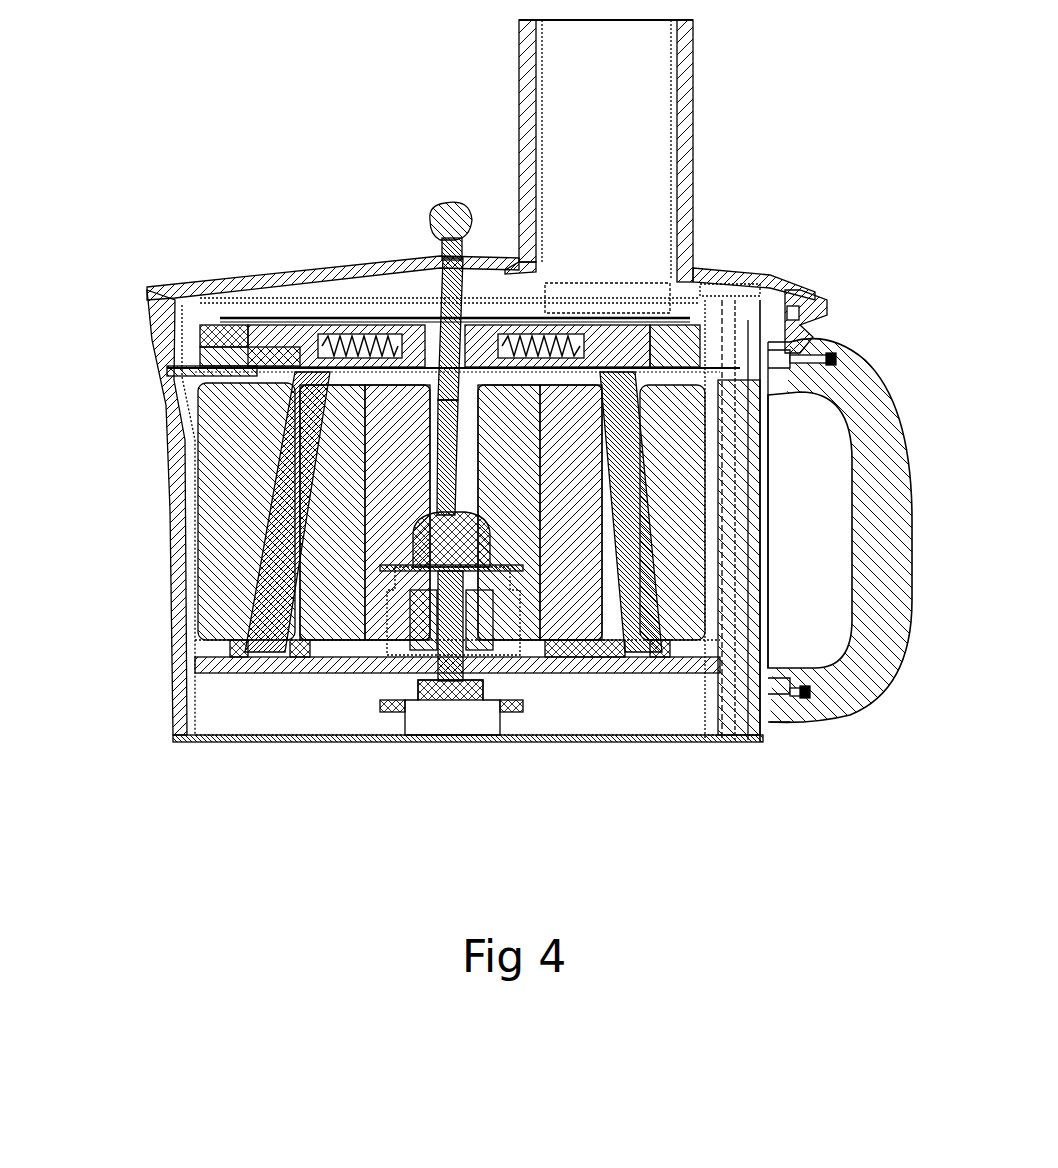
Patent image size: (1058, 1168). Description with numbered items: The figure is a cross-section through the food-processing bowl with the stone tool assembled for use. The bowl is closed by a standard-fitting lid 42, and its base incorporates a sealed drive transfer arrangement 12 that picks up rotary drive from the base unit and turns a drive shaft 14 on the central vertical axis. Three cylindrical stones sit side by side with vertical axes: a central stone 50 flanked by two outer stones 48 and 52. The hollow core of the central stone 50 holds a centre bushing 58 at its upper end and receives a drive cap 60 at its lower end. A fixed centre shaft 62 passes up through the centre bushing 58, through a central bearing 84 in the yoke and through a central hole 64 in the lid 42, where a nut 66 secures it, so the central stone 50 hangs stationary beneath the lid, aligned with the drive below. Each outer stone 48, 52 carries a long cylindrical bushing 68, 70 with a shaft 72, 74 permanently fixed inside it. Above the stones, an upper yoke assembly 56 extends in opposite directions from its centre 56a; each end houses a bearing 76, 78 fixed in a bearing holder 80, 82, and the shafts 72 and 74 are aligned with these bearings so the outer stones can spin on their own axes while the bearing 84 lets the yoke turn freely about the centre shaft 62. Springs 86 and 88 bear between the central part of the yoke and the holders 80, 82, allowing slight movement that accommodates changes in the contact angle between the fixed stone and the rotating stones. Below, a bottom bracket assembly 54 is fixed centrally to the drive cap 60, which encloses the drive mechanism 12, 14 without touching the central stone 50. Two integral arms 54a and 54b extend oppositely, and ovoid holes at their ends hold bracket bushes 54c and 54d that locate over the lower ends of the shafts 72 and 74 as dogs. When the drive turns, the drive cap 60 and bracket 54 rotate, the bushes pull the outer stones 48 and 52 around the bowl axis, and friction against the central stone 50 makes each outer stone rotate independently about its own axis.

The sealed drive transfer arrangement 12 is at (447, 715).
The drive shaft 14 is at (450, 632).
The lid 42 is at (352, 263).
The cylindrical stone 48 is at (680, 617).
The central stone 50 is at (533, 585).
The cylindrical stone 52 is at (223, 617).
The bottom bracket assembly 54 is at (357, 668).
The integral arm 54a is at (570, 652).
The integral arm 54b is at (325, 652).
The bracket bush 54c is at (657, 658).
The bracket bush 54d is at (241, 655).
The upper yoke assembly 56 is at (660, 300).
The centre of the yoke assembly 56a is at (480, 318).
The centre bushing 58 is at (472, 447).
The drive cap 60 is at (485, 553).
The centre shaft 62 is at (447, 427).
The central hole 64 is at (460, 257).
The nut 66 is at (443, 212).
The long cylindrical bushing 68 is at (660, 582).
The long cylindrical bushing 70 is at (243, 502).
The shaft 72 is at (630, 508).
The shaft 74 is at (268, 447).
The bearing 76 is at (653, 345).
The bearing 78 is at (240, 352).
The bearing holder 80 is at (668, 357).
The bearing holder 82 is at (230, 333).
The central bearing 84 is at (428, 335).
The spring 86 is at (600, 312).
The spring 88 is at (362, 350).